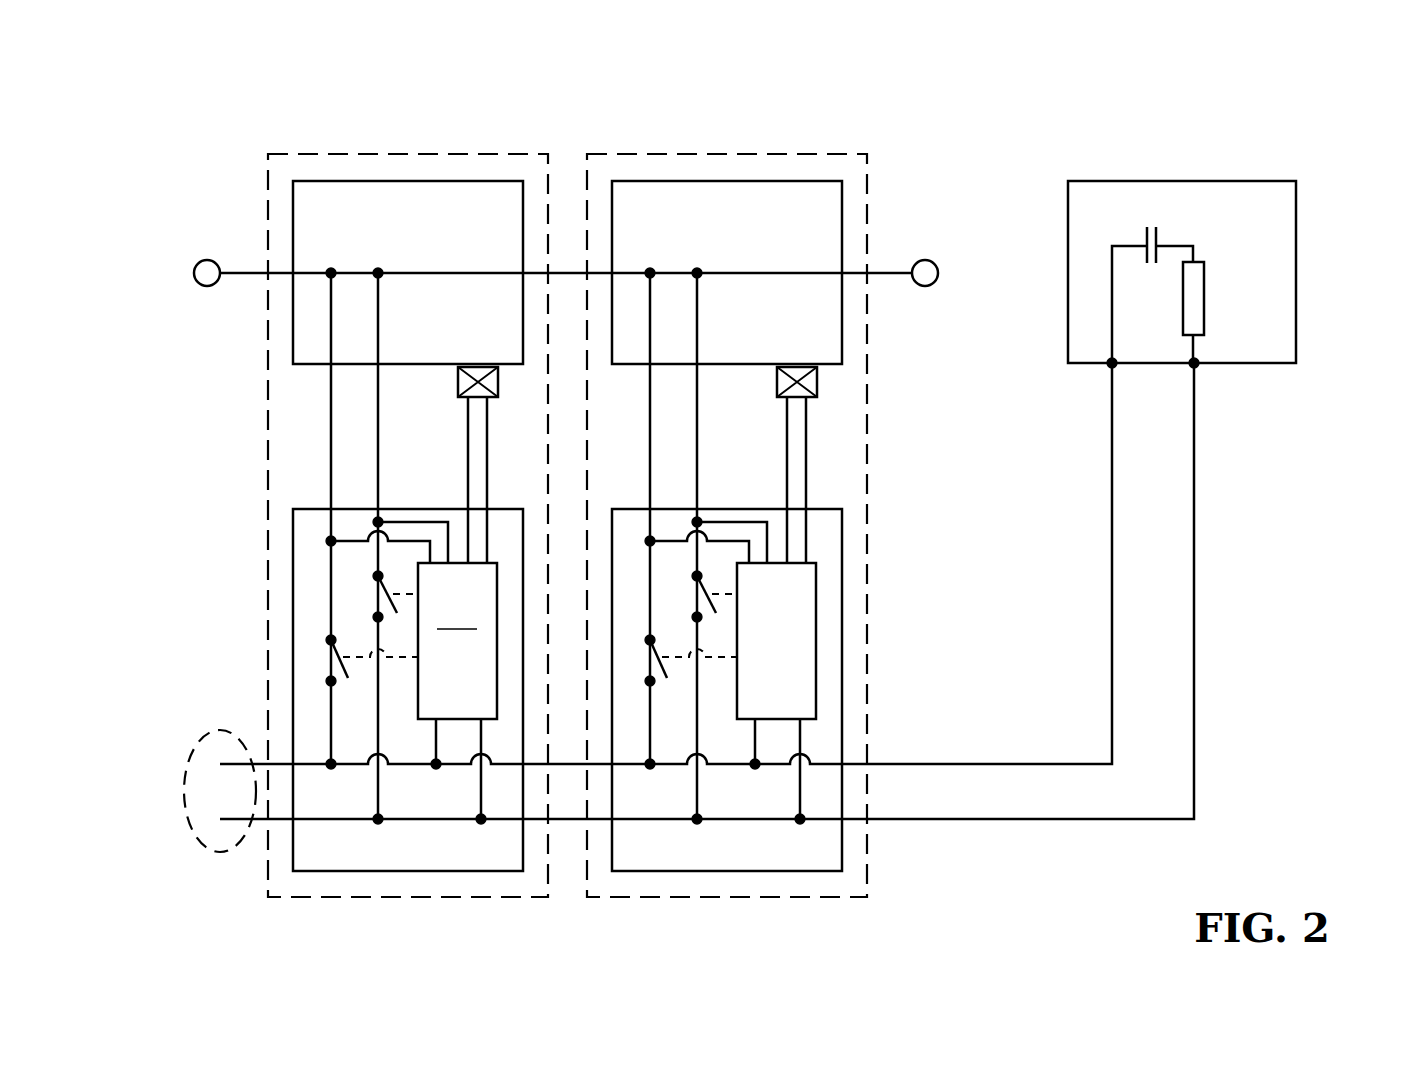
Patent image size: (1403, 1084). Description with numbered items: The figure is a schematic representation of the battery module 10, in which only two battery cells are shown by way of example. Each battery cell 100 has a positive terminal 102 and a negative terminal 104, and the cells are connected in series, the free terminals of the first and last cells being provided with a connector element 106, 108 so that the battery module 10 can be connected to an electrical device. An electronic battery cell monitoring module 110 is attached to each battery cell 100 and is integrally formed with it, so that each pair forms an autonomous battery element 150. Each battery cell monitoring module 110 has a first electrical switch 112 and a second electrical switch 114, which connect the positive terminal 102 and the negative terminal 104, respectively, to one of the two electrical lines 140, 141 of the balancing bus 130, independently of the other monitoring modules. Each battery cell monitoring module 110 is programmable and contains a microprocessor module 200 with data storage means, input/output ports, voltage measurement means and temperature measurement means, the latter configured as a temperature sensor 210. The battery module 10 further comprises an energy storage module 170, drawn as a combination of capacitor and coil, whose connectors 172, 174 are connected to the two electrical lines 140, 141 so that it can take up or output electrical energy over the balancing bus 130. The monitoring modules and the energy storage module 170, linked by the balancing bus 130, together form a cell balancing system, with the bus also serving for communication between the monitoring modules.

The battery module 10 is at (1005, 69).
The battery cell 100 is at (495, 193).
The positive terminal 102 is at (331, 273).
The negative terminal 104 is at (378, 273).
The connector element 106 is at (201, 284).
The connector element 108 is at (931, 262).
The battery cell monitoring module 110 is at (487, 855).
The first electrical switch 112 is at (333, 653).
The second electrical switch 114 is at (378, 588).
The balancing bus 130 is at (196, 837).
The electrical line 140 is at (1084, 762).
The electrical line 141 is at (1166, 823).
The autonomous battery element 150 is at (275, 160).
The energy storage module 170 is at (1285, 212).
The connector 172 is at (1110, 366).
The connector 174 is at (1196, 366).
The microprocessor module 200 is at (617, 691).
The temperature sensor 210 is at (457, 380).